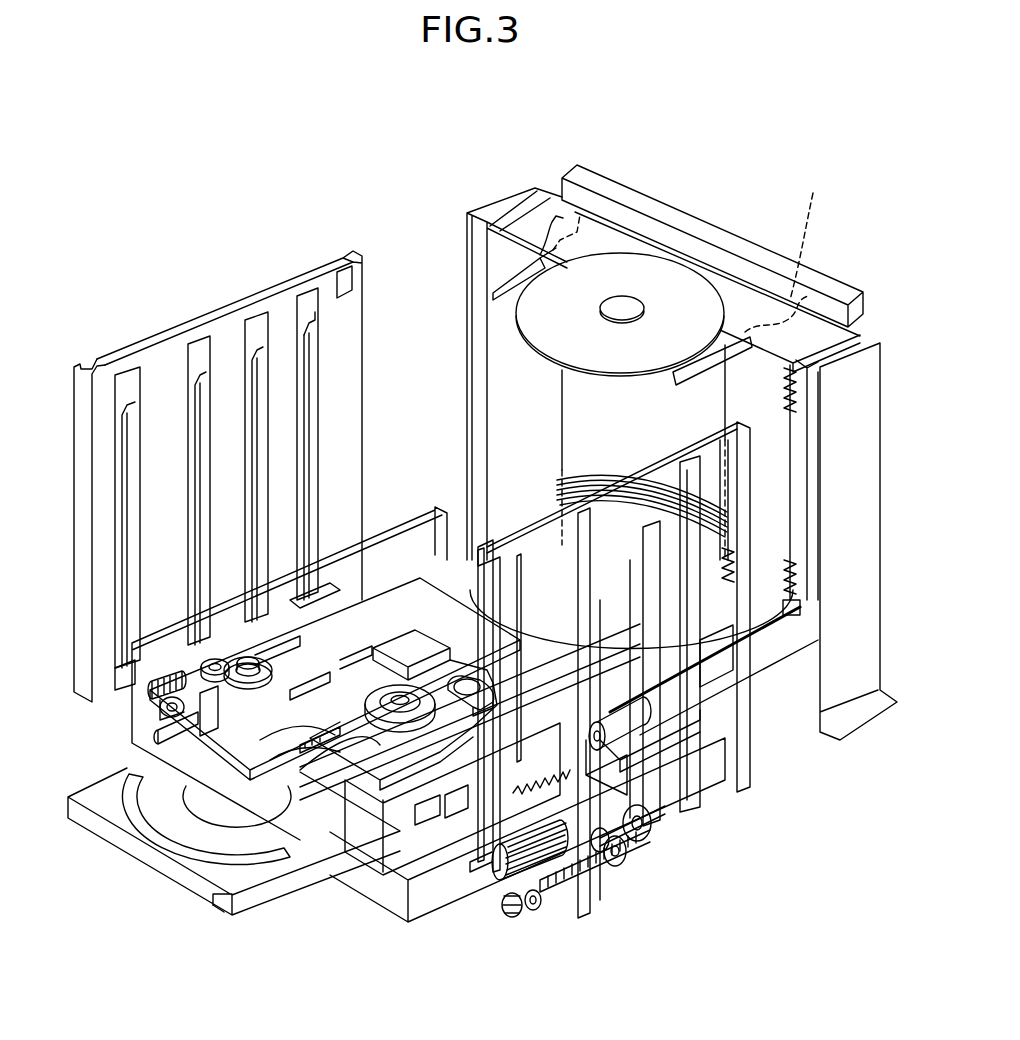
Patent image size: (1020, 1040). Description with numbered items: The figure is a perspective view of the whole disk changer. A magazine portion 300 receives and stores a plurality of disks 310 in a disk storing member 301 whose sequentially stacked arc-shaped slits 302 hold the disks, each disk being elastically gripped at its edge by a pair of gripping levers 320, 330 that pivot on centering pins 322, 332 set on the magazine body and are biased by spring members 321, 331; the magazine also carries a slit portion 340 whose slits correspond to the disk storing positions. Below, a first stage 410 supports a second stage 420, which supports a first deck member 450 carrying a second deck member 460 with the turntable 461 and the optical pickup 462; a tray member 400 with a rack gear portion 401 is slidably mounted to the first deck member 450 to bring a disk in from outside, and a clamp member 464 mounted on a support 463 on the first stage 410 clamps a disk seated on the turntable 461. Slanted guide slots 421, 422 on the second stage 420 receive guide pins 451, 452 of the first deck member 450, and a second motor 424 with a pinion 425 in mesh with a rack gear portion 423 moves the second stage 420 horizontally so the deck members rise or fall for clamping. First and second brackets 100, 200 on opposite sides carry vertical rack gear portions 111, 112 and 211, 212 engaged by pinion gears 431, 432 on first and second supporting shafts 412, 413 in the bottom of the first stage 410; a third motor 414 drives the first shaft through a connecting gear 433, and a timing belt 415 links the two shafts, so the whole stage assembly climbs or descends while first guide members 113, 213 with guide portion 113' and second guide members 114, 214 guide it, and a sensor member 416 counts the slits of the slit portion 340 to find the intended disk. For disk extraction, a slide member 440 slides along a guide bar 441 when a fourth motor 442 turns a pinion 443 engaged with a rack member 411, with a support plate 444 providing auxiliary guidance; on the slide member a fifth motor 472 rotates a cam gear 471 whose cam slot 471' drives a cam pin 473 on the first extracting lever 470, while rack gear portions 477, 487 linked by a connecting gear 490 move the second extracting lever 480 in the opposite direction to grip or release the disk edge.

The first bracket 100 is at (250, 442).
The vertical rack gear portion 111 is at (130, 414).
The vertical rack gear portion 112 is at (258, 348).
The first guide member 113 is at (361, 428).
The guide portion 113' is at (318, 258).
The second guide member 114 is at (197, 350).
The second bracket 200 is at (666, 630).
The vertical rack gear portion 211 is at (487, 660).
The vertical rack gear portion 212 is at (702, 673).
The first guide member 213 is at (694, 557).
The second guide member 214 is at (574, 597).
The magazine portion 300 is at (657, 352).
The disk storing member 301 is at (612, 178).
The arc-shaped slits 302 is at (558, 487).
The disk 310 is at (640, 276).
The gripping lever 320 is at (485, 262).
The spring member 321 is at (578, 212).
The centering pin 322 is at (521, 290).
The gripping lever 330 is at (674, 380).
The spring member 331 is at (809, 236).
The centering pin 332 is at (752, 334).
The slit portion 340 is at (791, 412).
The tray member 400 is at (183, 898).
The rack gear portion 401 is at (216, 910).
The first stage 410 is at (393, 922).
The rack member 411 is at (158, 718).
The first supporting shaft 412 is at (497, 880).
The second supporting shaft 413 is at (702, 806).
The third motor 414 is at (566, 860).
The timing belt 415 is at (548, 876).
The sensor member 416 is at (802, 608).
The second stage 420 is at (348, 858).
The guide slot 421 is at (426, 812).
The guide slot 422 is at (620, 860).
The rack gear portion 423 is at (598, 850).
The second motor 424 is at (718, 790).
The pinion 425 is at (655, 836).
The pinion gear 431 is at (123, 676).
The pinion gear 432 is at (672, 834).
The connecting gear 433 is at (536, 910).
The slide member 440 is at (262, 746).
The guide bar 441 is at (159, 745).
The fourth motor 442 is at (200, 659).
The pinion 443 is at (160, 680).
The support plate 444 is at (479, 872).
The first deck member 450 is at (478, 612).
The guide pin 451 is at (455, 802).
The guide pin 452 is at (648, 828).
The second deck member 460 is at (456, 670).
The turntable 461 is at (336, 722).
The optical pickup 462 is at (467, 682).
The support 463 is at (312, 598).
The clamp member 464 is at (355, 666).
The first extracting lever 470 is at (308, 600).
The cam gear 471 is at (257, 577).
The cam slot 471' is at (258, 651).
The fifth motor 472 is at (243, 658).
The cam pin 473 is at (219, 731).
The rack gear portion 477 is at (309, 693).
The second extracting lever 480 is at (404, 688).
The rack gear portion 487 is at (298, 742).
The connecting gear 490 is at (320, 748).